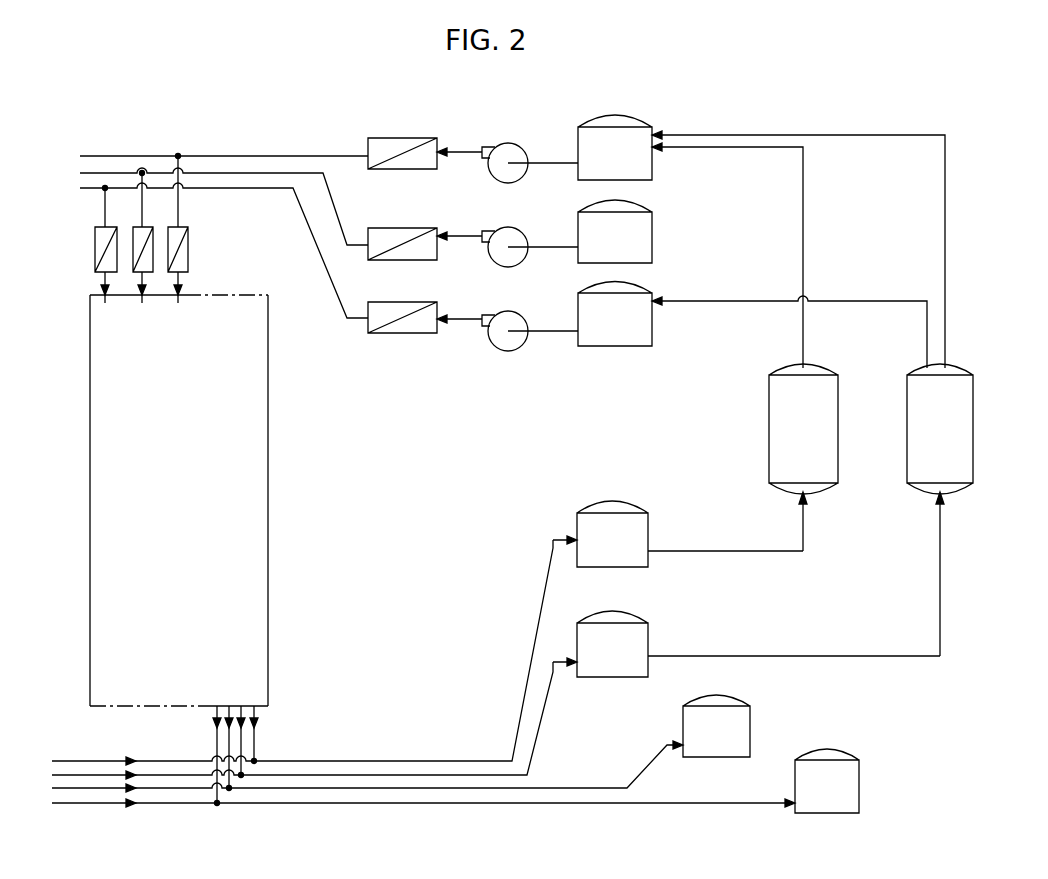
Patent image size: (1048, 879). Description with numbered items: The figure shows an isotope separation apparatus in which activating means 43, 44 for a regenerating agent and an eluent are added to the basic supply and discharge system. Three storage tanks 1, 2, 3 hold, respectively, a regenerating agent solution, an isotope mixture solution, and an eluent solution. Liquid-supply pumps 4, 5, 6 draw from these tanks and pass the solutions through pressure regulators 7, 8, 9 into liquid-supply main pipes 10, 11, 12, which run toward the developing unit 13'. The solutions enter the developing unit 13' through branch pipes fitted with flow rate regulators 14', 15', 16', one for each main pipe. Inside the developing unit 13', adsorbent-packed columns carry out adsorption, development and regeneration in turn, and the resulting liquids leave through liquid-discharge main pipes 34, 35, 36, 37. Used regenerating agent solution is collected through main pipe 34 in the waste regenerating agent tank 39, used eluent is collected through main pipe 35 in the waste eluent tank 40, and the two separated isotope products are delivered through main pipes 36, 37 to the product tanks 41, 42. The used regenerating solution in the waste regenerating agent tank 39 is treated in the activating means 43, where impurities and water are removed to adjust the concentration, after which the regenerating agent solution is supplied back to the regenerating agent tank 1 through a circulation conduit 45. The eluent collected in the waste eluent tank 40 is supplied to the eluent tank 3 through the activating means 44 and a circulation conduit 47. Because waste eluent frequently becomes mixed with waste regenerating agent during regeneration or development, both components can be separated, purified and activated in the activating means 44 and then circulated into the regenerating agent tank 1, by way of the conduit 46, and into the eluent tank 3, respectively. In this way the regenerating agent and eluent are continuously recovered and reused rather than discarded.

The storage tank 1 is at (615, 147).
The storage tank 2 is at (615, 231).
The storage tank 3 is at (615, 314).
The liquid-supply pump 4 is at (493, 178).
The liquid-supply pump 5 is at (493, 262).
The liquid-supply pump 6 is at (492, 341).
The pressure regulator 7 is at (422, 169).
The pressure regulator 8 is at (410, 261).
The pressure regulator 9 is at (408, 334).
The liquid-supply main pipe 10 is at (208, 156).
The liquid-supply main pipe 11 is at (240, 173).
The liquid-supply main pipe 12 is at (245, 188).
The developing unit 13' is at (179, 483).
The flow rate regulator 14' is at (192, 229).
The flow rate regulator 15' is at (130, 238).
The flow rate regulator 16' is at (91, 245).
The liquid-discharge main pipe 34 is at (330, 761).
The liquid-discharge main pipe 35 is at (375, 775).
The liquid-discharge main pipe 36 is at (338, 790).
The liquid-discharge main pipe 37 is at (380, 804).
The waste regenerating agent tank 39 is at (678, 534).
The waste eluent tank 40 is at (746, 644).
The product tank 41 is at (716, 726).
The product tank 42 is at (827, 781).
The activating means 43 is at (803, 457).
The activating means 44 is at (940, 510).
The circulation conduit 45 is at (716, 148).
The circulation conduit 46 is at (775, 135).
The circulation conduit 47 is at (873, 301).